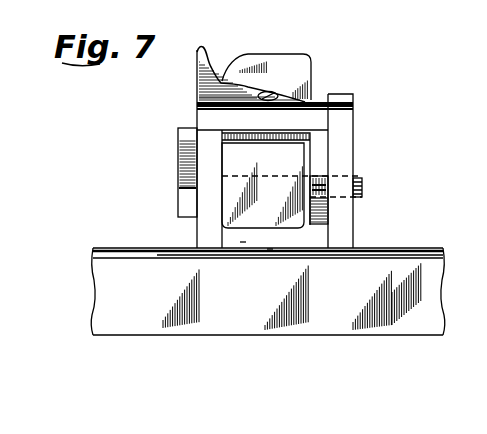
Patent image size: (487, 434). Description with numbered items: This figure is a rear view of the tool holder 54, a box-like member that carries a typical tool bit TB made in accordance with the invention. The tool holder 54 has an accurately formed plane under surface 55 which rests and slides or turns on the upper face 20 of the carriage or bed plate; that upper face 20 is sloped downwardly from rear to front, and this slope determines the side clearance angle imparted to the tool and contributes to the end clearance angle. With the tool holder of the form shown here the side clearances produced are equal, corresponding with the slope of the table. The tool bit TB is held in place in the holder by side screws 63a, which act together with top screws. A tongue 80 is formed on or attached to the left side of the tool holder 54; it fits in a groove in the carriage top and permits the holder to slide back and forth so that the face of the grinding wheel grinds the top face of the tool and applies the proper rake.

The tool bit TB is at (300, 87).
The tongue 80 is at (178, 170).
The side screws 63a is at (362, 188).
The upper face of the carriage 20 is at (380, 245).
The tool holder 54 is at (242, 240).
The plane under surface 55 is at (270, 249).